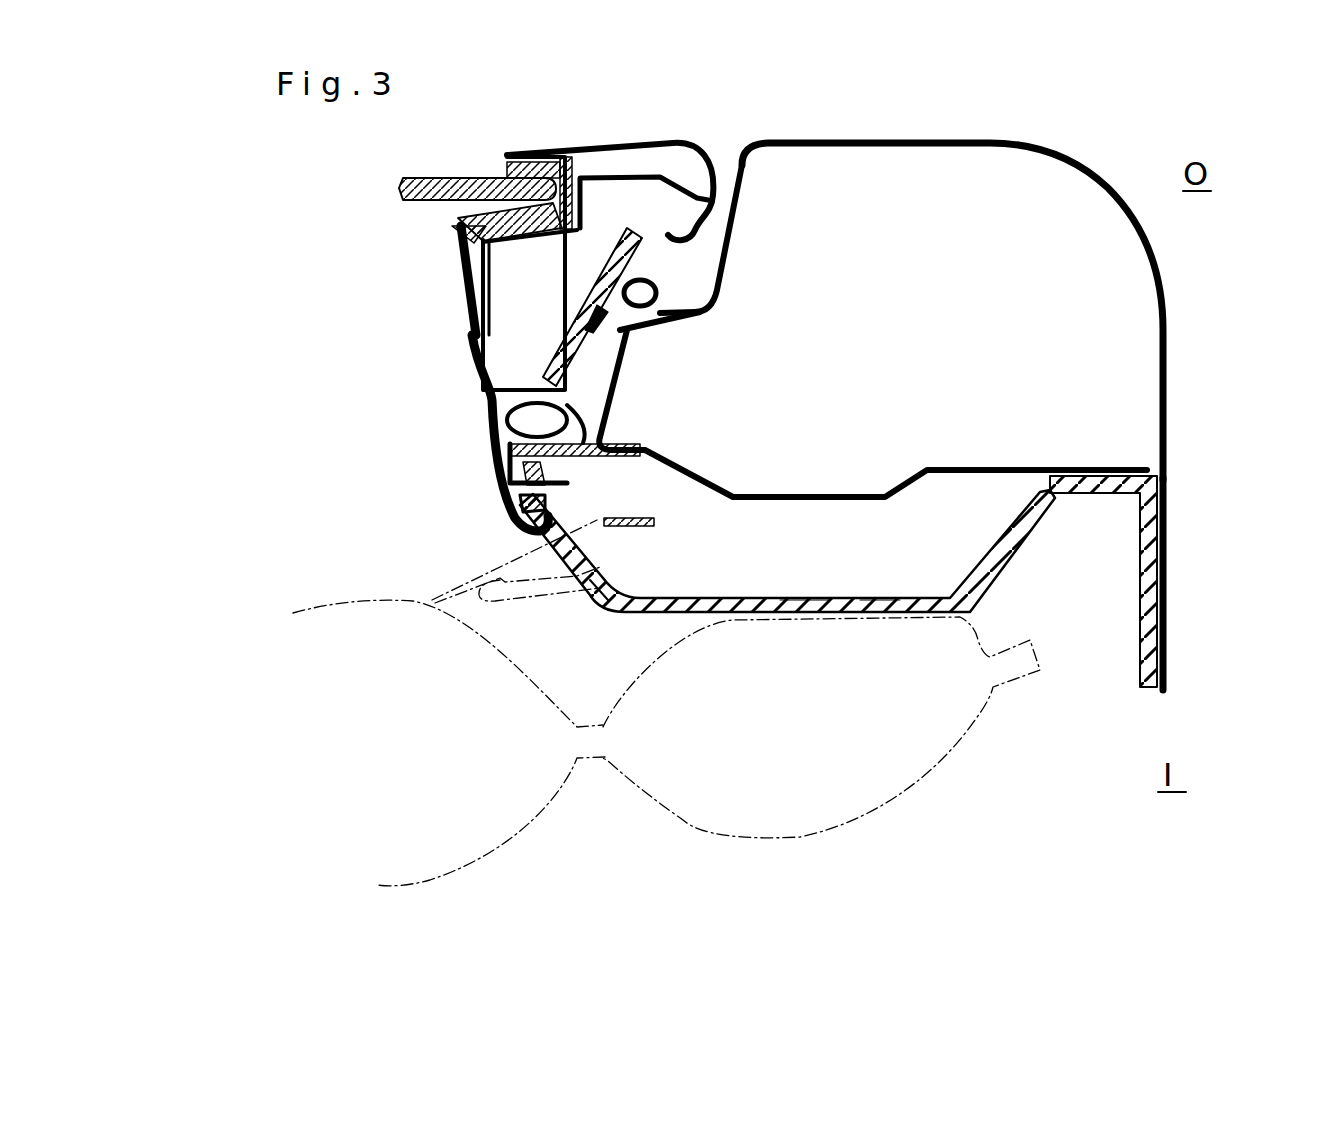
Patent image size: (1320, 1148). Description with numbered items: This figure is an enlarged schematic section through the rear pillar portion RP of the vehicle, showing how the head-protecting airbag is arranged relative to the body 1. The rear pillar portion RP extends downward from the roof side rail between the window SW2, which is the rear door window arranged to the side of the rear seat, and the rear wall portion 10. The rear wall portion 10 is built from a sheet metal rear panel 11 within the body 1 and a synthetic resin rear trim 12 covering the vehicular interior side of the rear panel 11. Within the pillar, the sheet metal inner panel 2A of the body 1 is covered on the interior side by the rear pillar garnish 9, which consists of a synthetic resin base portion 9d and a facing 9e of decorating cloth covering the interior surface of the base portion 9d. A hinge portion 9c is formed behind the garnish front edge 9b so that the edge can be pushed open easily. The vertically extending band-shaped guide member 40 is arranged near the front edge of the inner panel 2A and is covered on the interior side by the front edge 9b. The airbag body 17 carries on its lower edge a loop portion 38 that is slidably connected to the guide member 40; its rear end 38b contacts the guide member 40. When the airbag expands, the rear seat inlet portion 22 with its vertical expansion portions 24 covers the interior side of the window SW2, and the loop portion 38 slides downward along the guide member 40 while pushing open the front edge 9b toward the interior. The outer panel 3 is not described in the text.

The body 1 is at (835, 320).
The outer panel 3 is at (888, 147).
The inner panel 2A is at (915, 462).
The window SW2 is at (422, 203).
The rear pillar garnish 9 is at (801, 600).
The front edge of the rear pillar garnish 9b is at (537, 508).
The hinge portion 9c is at (600, 583).
The base portion 9d is at (805, 614).
The facing 9e is at (873, 614).
The guide member 40 is at (658, 523).
The loop portion 38 is at (465, 580).
The rear end of the loop portion 38b is at (648, 517).
The rear wall portion 10 is at (1181, 583).
The rear panel 11 is at (1173, 553).
The rear trim 12 is at (1262, 535).
The rear pillar portion RP is at (1003, 440).
The rear seat inlet portion 22 is at (548, 820).
The vertical expansion portions 24 is at (692, 822).
The airbag body 17 is at (893, 812).